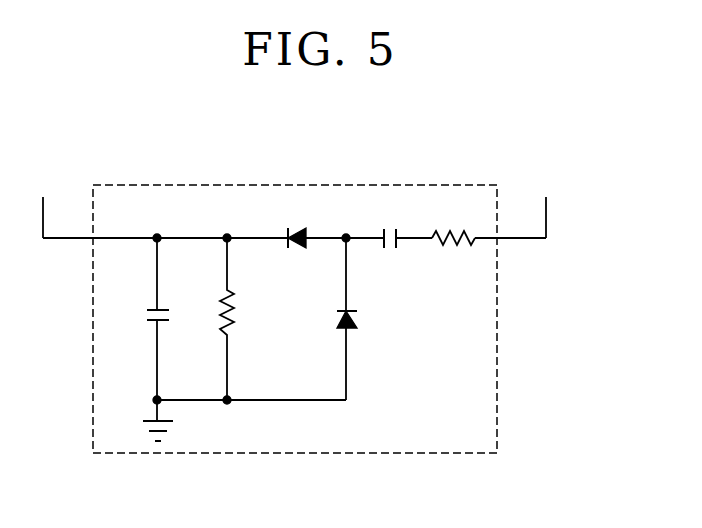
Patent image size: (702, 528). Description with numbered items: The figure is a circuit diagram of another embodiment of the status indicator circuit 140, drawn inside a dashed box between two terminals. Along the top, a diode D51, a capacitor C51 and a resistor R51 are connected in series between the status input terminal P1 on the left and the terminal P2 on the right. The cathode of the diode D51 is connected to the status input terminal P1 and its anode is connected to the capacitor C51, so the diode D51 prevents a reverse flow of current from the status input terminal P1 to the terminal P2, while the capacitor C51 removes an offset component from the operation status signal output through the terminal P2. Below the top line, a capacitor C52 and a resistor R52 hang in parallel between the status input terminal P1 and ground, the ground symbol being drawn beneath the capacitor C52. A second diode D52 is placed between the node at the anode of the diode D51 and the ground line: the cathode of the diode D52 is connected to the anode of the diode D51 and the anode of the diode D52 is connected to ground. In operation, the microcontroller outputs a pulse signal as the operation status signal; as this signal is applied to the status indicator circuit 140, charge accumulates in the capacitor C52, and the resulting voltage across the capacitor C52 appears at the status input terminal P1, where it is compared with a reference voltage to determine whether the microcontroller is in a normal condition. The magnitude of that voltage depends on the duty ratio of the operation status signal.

The status indicator circuit 140 is at (367, 183).
The status input terminal P1 is at (42, 205).
The terminal P2 is at (542, 205).
The diode D51 is at (297, 225).
The capacitor C51 is at (388, 225).
The resistor R51 is at (453, 224).
The capacitor C52 is at (135, 319).
The resistor R52 is at (250, 319).
The diode D52 is at (371, 319).